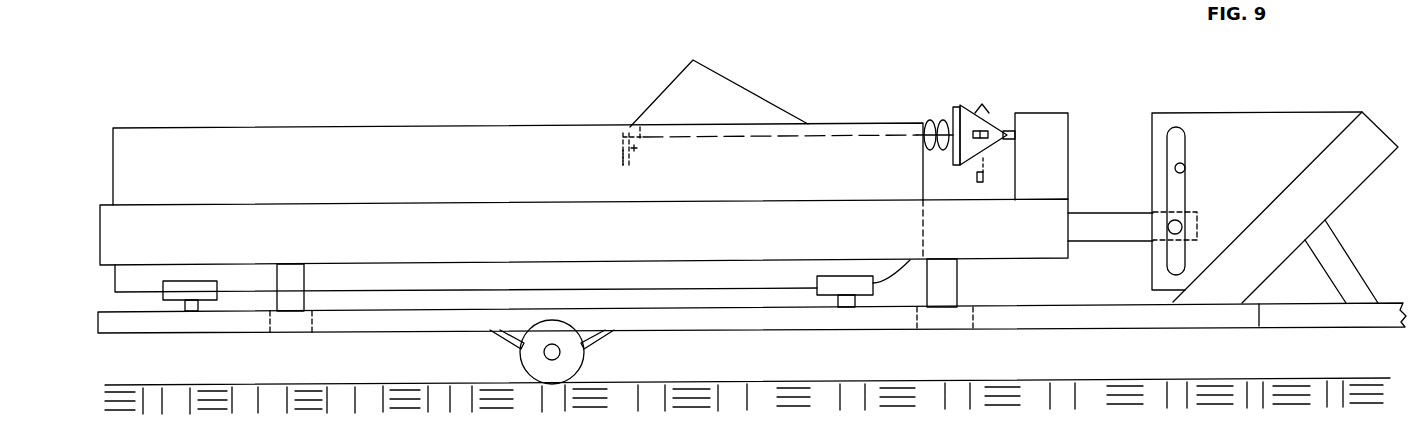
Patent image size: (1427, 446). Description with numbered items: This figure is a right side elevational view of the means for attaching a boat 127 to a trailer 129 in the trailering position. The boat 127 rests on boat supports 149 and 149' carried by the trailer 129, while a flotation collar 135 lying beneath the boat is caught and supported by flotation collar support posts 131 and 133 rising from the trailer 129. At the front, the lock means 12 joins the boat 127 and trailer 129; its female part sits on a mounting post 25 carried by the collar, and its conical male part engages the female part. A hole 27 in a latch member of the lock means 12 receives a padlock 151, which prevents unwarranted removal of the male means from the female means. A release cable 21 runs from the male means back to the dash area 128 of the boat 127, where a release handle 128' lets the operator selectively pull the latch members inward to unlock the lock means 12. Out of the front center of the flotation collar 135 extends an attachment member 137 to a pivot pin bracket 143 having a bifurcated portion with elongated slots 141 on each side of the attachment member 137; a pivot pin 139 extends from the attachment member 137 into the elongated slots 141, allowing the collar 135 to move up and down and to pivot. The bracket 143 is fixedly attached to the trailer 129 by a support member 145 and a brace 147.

The boat 127 is at (310, 130).
The flotation collar 135 is at (447, 215).
The release cable 21 is at (882, 140).
The dash area 128 is at (659, 153).
The release handle 128' is at (591, 164).
The lock means 12 is at (1015, 115).
The hole 27 is at (985, 157).
The padlock 151 is at (976, 178).
The mounting post 25 is at (1046, 118).
The attachment member 137 is at (1095, 222).
The pivot pin 139 is at (1185, 228).
The pivot pin bracket 143 is at (1203, 118).
The elongated slot 141 is at (1185, 178).
The support member 145 is at (1380, 138).
The brace 147 is at (1340, 262).
The flotation collar support post 131 is at (287, 275).
The flotation collar support post 133 is at (950, 293).
The boat support 149' is at (137, 296).
The boat support 149 is at (850, 309).
The trailer 129 is at (217, 322).